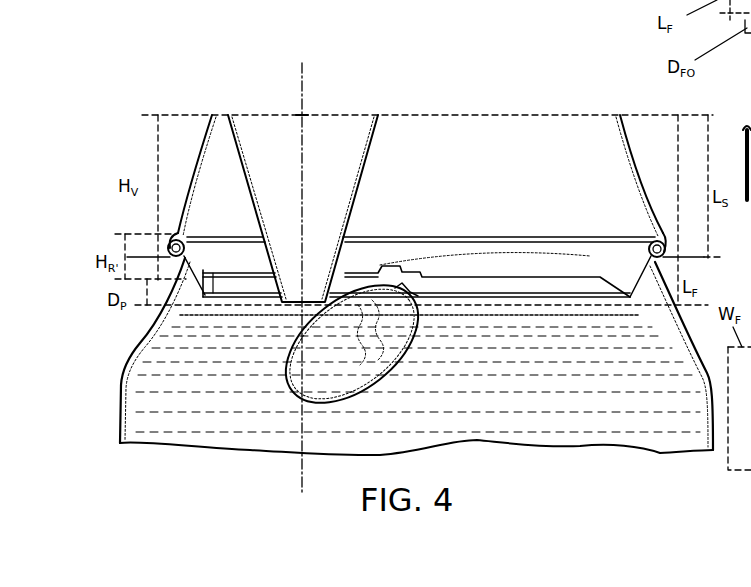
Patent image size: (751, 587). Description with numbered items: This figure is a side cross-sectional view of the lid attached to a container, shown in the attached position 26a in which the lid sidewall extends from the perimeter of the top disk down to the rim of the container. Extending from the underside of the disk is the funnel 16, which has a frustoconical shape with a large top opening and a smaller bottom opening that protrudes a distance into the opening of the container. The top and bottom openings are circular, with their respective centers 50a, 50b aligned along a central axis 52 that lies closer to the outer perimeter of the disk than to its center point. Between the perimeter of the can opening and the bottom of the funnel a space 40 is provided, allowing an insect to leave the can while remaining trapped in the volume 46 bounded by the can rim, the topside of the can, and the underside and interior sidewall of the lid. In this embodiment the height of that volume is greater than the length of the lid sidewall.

The funnel 16 is at (317, 127).
The attached position 26a is at (181, 176).
The space 40 is at (243, 265).
The volume 46 is at (517, 187).
The center of the top opening 50a is at (302, 115).
The center of the bottom opening 50b is at (303, 302).
The central axis 52 is at (300, 93).